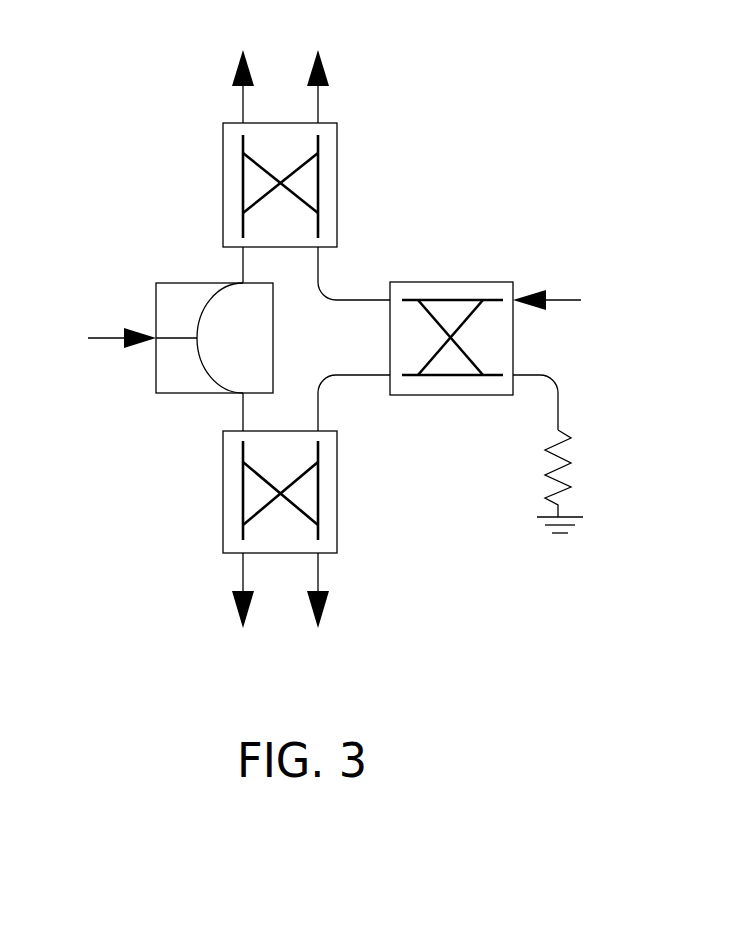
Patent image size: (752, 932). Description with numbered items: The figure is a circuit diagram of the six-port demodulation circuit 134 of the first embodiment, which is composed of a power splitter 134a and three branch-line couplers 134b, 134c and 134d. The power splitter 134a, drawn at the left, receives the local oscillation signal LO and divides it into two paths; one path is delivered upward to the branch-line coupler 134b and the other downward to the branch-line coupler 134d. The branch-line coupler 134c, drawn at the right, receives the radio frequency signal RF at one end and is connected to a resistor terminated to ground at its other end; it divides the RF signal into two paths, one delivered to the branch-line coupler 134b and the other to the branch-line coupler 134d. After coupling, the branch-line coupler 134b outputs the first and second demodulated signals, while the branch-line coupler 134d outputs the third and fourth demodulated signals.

The six-port demodulation circuit 134 is at (135, 110).
The power splitter 134a is at (173, 283).
The branch-line coupler 134b is at (337, 160).
The branch-line coupler 134c is at (452, 282).
The branch-line coupler 134d is at (337, 490).